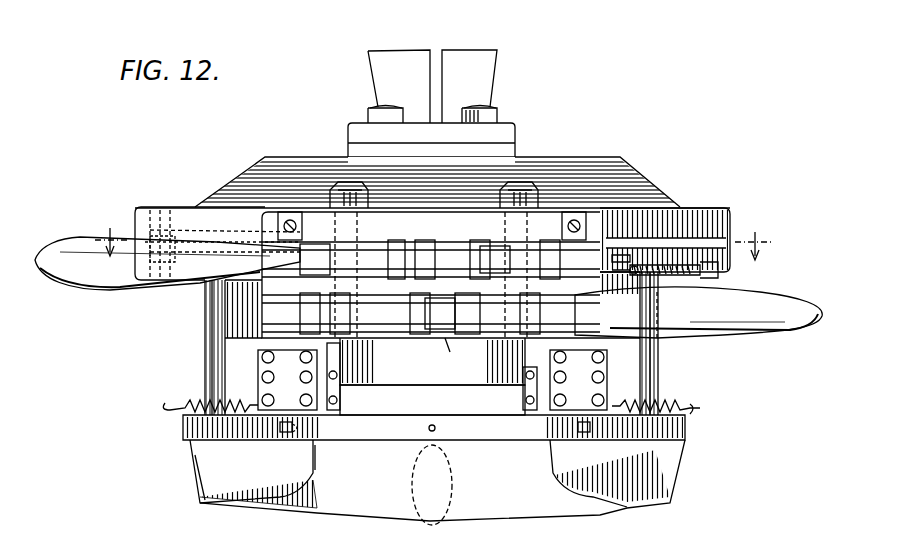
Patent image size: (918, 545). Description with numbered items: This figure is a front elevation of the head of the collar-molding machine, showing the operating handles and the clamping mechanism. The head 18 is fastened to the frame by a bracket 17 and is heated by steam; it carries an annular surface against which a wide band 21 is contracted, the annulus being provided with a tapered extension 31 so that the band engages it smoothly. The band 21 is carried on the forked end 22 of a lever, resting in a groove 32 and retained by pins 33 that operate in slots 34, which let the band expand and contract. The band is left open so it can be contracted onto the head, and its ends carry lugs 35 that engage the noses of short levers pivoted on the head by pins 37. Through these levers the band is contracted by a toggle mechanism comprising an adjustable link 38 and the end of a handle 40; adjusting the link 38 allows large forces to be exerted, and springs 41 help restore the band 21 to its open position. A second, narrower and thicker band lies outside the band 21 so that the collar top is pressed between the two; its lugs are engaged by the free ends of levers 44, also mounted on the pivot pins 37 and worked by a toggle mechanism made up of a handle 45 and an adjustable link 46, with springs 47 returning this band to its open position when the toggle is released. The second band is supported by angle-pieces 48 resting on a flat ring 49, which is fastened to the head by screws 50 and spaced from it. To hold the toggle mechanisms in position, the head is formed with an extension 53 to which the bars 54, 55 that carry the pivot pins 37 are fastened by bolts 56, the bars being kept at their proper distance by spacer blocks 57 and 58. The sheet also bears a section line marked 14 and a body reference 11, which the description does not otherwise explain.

The body 11 is at (212, 320).
The section line 14 is at (433, 234).
The bracket 17 is at (486, 76).
The head 18 is at (640, 190).
The band 21 is at (655, 368).
The forked end 22 is at (618, 492).
The tapered extension 31 is at (428, 376).
The groove 32 is at (548, 441).
The pins 33 is at (432, 424).
The slots 34 is at (297, 446).
The lugs 35 is at (276, 366).
The pins 37 is at (290, 208).
The adjustable link 38 is at (376, 316).
The handle 40 is at (785, 326).
The springs 41 is at (198, 406).
The levers 44 is at (605, 272).
The handle 45 is at (102, 290).
The adjustable link 46 is at (450, 252).
The springs 47 is at (700, 298).
The angle-pieces 48 is at (660, 243).
The flat ring 49 is at (728, 268).
The screws 50 is at (158, 286).
The extension 53 is at (400, 210).
The bar 54 is at (438, 312).
The bar 55 is at (446, 338).
The bolts 56 is at (502, 192).
The spacer block 57 is at (490, 250).
The spacer block 58 is at (393, 338).